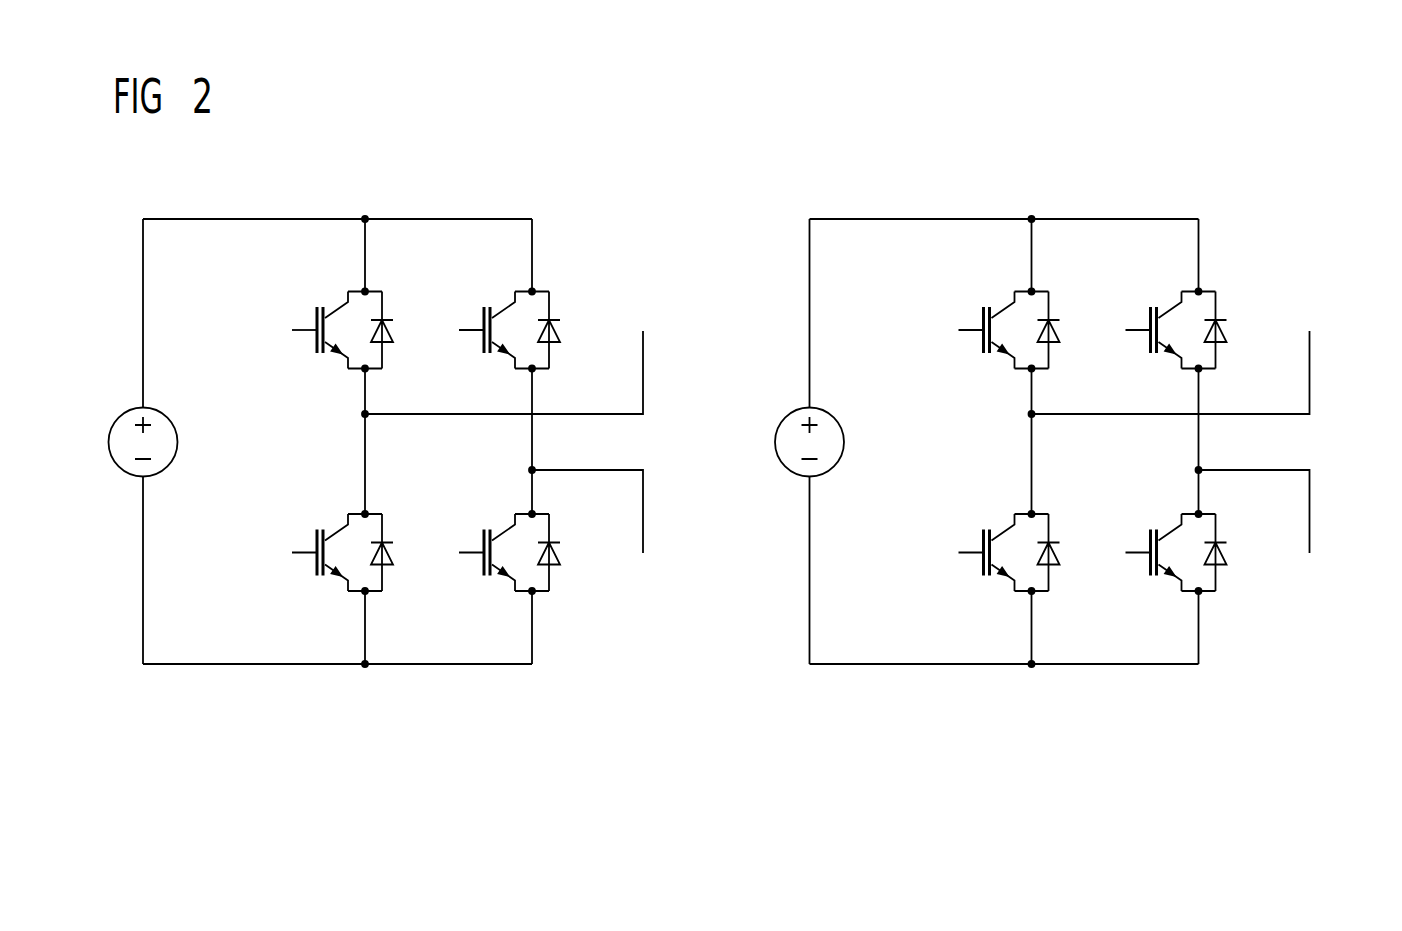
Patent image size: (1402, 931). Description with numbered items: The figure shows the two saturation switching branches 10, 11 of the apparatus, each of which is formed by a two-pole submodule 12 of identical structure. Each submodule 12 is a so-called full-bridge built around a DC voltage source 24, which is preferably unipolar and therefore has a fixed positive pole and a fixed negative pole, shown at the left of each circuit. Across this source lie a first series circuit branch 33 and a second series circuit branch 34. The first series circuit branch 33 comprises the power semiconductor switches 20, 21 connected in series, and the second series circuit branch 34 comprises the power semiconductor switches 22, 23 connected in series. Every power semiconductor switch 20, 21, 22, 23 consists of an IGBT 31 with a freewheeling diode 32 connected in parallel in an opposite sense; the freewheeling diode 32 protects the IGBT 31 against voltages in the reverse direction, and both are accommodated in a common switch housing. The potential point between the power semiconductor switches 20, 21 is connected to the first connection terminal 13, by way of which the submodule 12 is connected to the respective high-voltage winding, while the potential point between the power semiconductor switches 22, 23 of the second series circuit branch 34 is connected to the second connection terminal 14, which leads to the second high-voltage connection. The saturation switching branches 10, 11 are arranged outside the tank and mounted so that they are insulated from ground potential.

The saturation switching branch 10 is at (660, 208).
The saturation switching branch 11 is at (1068, 446).
The two-pole submodule 12 is at (125, 690).
The first connection terminal 13 is at (644, 375).
The second connection terminal 14 is at (644, 515).
The power semiconductor switch 20 is at (351, 306).
The power semiconductor switch 21 is at (328, 593).
The power semiconductor switch 22 is at (498, 293).
The power semiconductor switch 23 is at (495, 593).
The DC voltage source 24 is at (177, 443).
The IGBT 31 is at (285, 346).
The freewheeling diode 32 is at (412, 339).
The first series circuit branch 33 is at (350, 245).
The second series circuit branch 34 is at (545, 245).